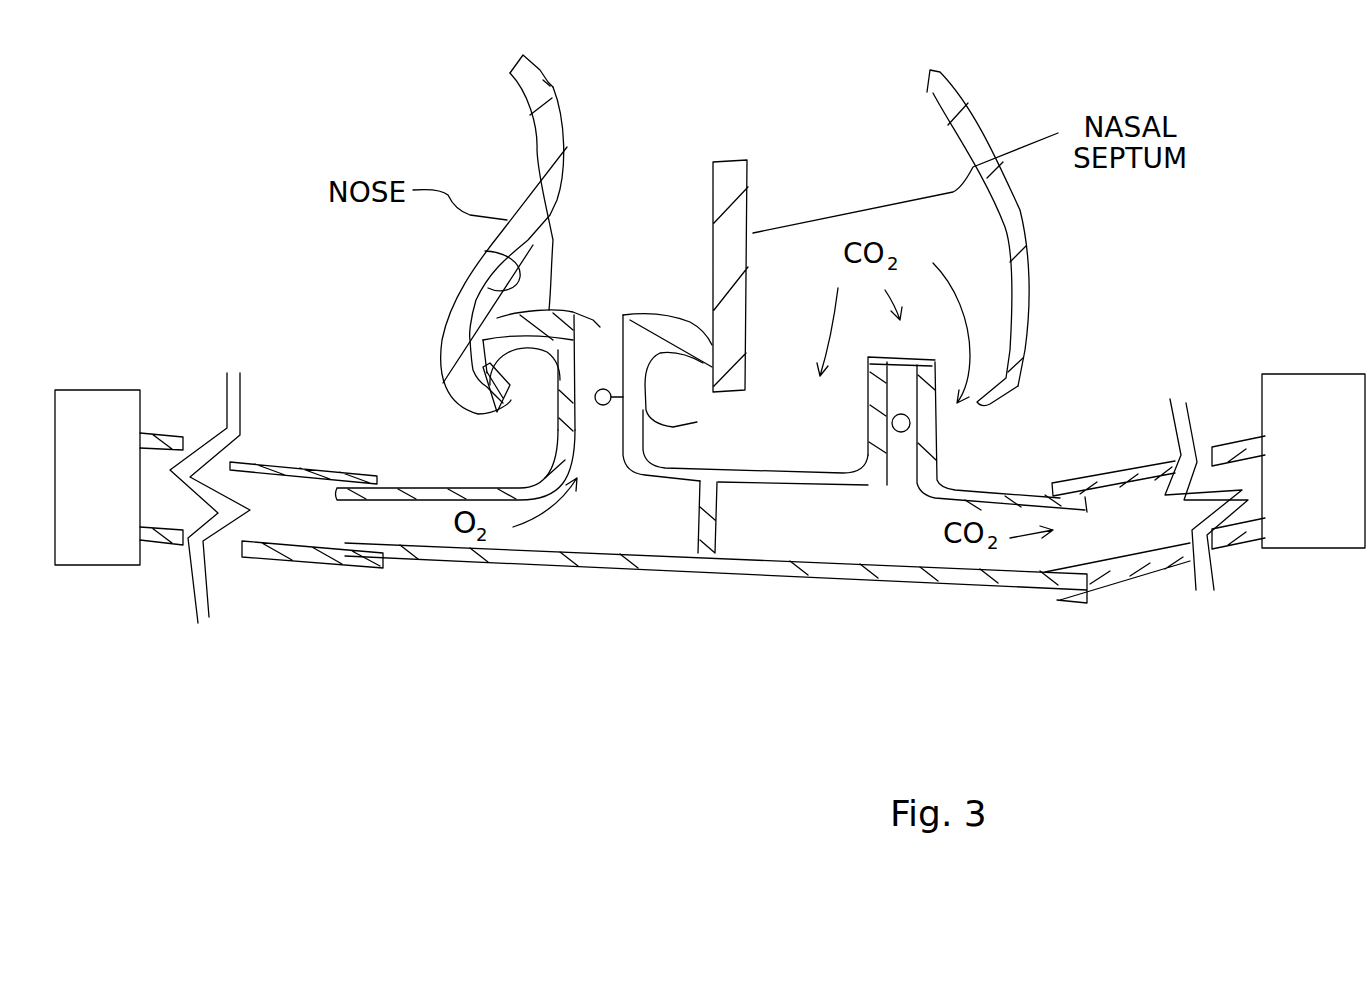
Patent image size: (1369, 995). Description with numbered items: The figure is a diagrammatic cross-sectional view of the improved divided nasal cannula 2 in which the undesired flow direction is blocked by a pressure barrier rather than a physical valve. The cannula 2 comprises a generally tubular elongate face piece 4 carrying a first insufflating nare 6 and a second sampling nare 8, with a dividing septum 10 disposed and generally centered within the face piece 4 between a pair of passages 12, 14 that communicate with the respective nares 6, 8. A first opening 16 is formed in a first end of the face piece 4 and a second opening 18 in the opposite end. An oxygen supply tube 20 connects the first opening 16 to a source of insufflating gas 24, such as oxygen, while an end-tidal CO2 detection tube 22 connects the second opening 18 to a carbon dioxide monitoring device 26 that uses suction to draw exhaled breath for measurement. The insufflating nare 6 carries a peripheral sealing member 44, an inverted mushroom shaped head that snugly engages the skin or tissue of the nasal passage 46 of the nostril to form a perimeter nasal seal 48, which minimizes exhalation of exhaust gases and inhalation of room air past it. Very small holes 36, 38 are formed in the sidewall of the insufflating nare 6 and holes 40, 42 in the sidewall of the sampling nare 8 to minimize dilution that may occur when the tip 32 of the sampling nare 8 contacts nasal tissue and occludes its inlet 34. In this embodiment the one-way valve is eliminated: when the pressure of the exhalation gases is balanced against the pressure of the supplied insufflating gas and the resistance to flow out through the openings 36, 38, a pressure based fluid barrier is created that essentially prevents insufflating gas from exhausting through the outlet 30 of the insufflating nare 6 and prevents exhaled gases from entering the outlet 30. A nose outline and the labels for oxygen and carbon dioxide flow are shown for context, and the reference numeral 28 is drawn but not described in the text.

The nasal cannula 2 is at (412, 708).
The face piece 4 is at (753, 573).
The first insufflating nare 6 is at (553, 433).
The second sampling nare 8 is at (933, 452).
The dividing septum 10 is at (697, 527).
The passage 12 is at (590, 486).
The passage 14 is at (885, 498).
The first opening 16 is at (338, 518).
The second opening 18 is at (1077, 554).
The oxygen supply tube 20 is at (312, 465).
The end-tidal CO2 detection tube 22 is at (1118, 470).
The source of insufflating gas 24 is at (90, 567).
The carbon dioxide monitoring device 26 is at (1300, 548).
The nose 28 is at (538, 187).
The outlet of the insufflating nare 30 is at (570, 342).
The tip of the sampling nare 32 is at (933, 360).
The inlet of the sampling nare 34 is at (908, 340).
The hole 36 is at (731, 399).
The hole 38 is at (698, 422).
The hole 40 is at (979, 430).
The hole 42 is at (912, 422).
The peripheral sealing member 44 is at (497, 316).
The nasal passage 46 is at (485, 251).
The perimeter nasal seal 48 is at (480, 407).